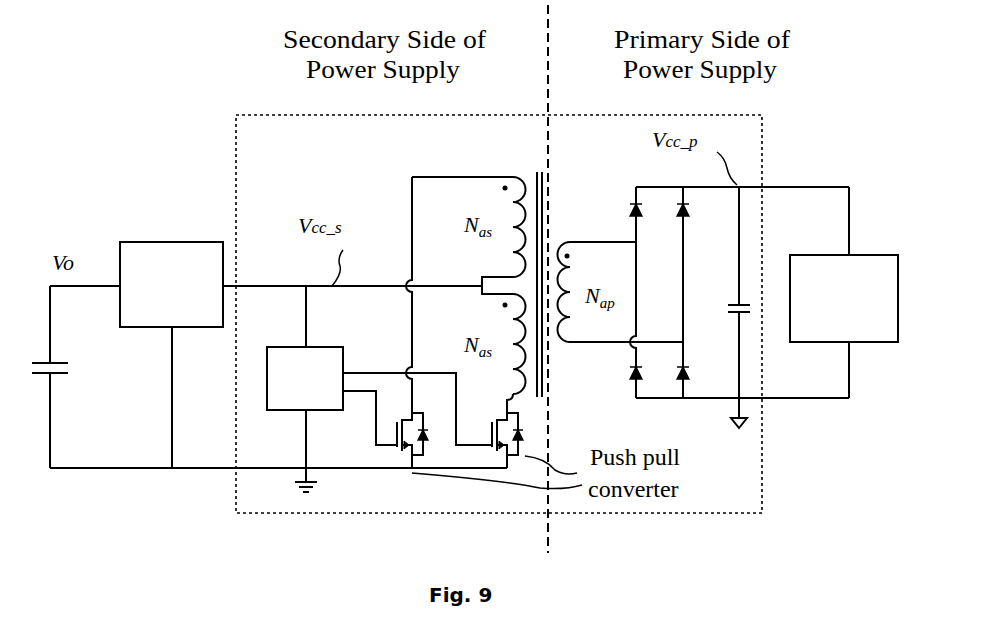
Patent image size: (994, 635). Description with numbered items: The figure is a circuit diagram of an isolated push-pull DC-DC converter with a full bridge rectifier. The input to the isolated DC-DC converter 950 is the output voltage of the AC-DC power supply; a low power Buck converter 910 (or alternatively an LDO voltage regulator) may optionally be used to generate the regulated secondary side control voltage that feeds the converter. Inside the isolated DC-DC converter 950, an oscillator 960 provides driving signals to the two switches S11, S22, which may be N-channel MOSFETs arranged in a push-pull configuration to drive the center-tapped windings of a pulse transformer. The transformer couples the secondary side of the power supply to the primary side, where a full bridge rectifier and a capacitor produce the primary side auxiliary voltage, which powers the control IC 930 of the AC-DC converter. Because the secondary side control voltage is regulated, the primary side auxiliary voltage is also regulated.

The Buck converter 910 is at (137, 240).
The control IC 930 is at (868, 252).
The isolated DC-DC converter 950 is at (236, 128).
The oscillator 960 is at (283, 345).
The switch S11 is at (375, 322).
The switch S22 is at (493, 431).